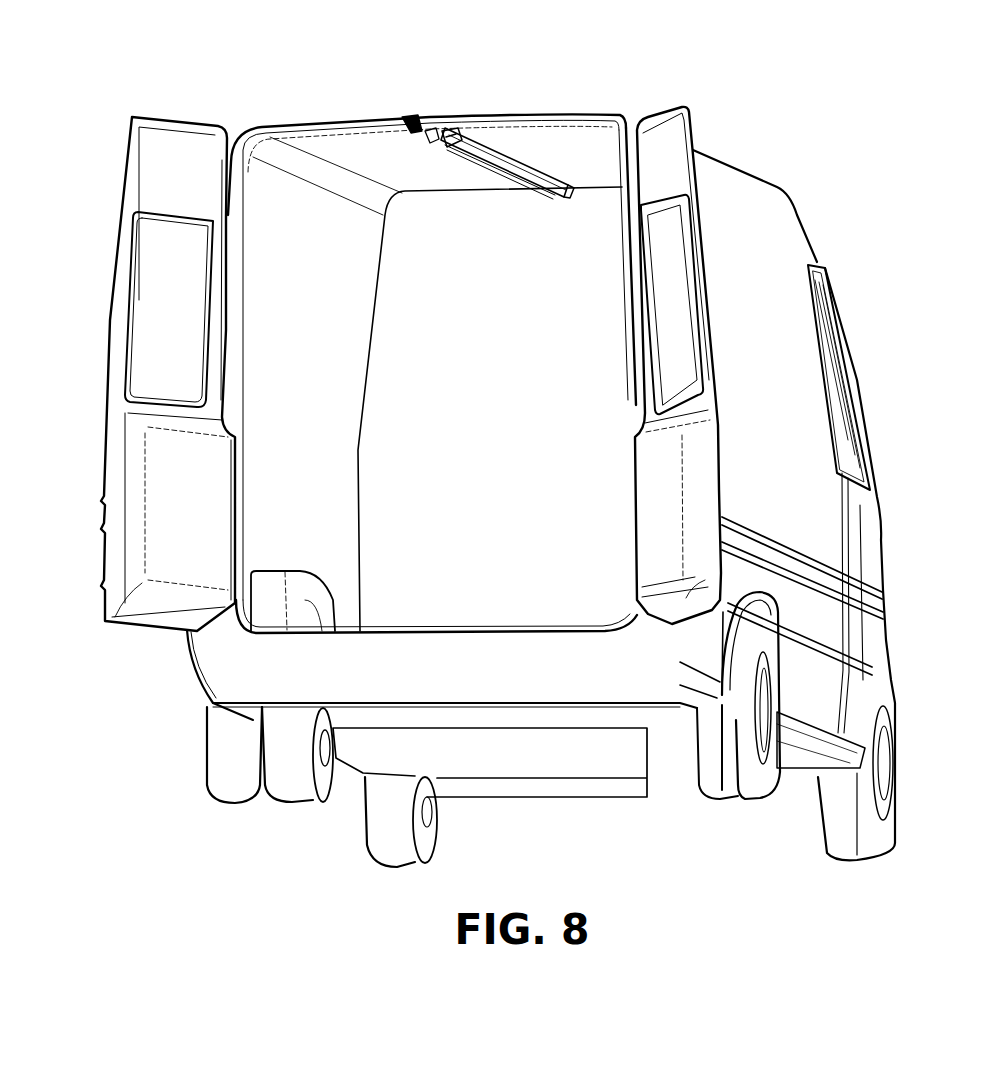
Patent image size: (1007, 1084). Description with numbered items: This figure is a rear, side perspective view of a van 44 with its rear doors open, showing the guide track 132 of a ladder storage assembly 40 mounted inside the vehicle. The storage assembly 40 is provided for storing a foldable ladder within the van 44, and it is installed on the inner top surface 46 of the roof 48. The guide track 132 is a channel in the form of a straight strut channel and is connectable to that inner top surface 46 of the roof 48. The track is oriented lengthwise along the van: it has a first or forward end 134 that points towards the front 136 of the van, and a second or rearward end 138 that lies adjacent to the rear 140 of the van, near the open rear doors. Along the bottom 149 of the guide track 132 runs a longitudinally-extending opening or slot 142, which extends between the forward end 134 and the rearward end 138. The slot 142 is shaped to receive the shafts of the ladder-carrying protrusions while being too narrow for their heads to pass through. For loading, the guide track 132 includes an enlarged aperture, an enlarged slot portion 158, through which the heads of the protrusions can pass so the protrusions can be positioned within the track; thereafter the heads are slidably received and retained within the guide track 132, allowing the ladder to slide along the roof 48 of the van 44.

The storage assembly 40 is at (485, 156).
The van 44 is at (788, 232).
The inner top surface 46 is at (318, 143).
The roof 48 is at (590, 117).
The guide track 132 is at (407, 118).
The forward end 134 is at (569, 196).
The front 136 is at (890, 532).
The rearward end 138 is at (430, 130).
The rear 140 is at (163, 668).
The slot 142 is at (477, 160).
The bottom 149 is at (460, 150).
The enlarged slot portion 158 is at (456, 131).